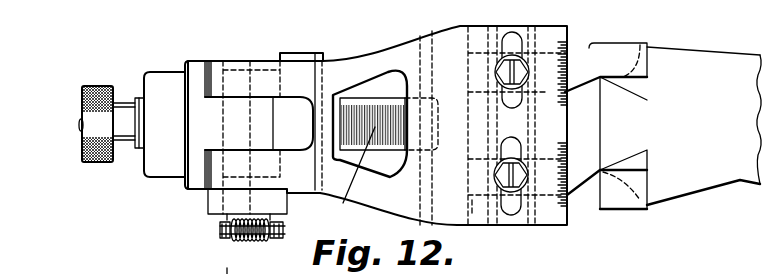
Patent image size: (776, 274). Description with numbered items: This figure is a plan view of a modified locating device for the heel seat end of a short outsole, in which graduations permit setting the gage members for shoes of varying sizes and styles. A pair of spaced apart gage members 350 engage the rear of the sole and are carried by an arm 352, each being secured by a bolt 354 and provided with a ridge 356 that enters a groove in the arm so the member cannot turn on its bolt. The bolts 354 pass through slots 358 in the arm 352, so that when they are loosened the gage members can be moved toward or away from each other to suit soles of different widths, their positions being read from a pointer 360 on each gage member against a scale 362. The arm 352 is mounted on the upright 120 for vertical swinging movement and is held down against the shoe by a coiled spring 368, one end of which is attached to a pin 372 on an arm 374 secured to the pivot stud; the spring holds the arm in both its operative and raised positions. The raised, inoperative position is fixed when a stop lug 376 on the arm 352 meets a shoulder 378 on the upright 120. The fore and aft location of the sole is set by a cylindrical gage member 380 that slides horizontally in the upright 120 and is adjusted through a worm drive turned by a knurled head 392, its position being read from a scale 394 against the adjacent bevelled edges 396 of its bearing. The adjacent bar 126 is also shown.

The upright 120 is at (153, 80).
The bar 126 is at (704, 160).
The gage members 350 is at (648, 77).
The arm 352 is at (453, 214).
The bolt 354 is at (515, 105).
The ridge 356 is at (475, 197).
The slots 358 is at (513, 204).
The pointer 360 is at (570, 76).
The scale 362 is at (567, 57).
The coiled spring 368 is at (228, 226).
The pin 372 is at (272, 225).
The arm 374 is at (227, 273).
The stop lug 376 is at (236, 90).
The shoulder 378 is at (197, 172).
The cylindrical gage member 380 is at (362, 100).
The knurled head 392 is at (82, 93).
The scale 394 is at (363, 176).
The bevelled edges 396 is at (333, 106).